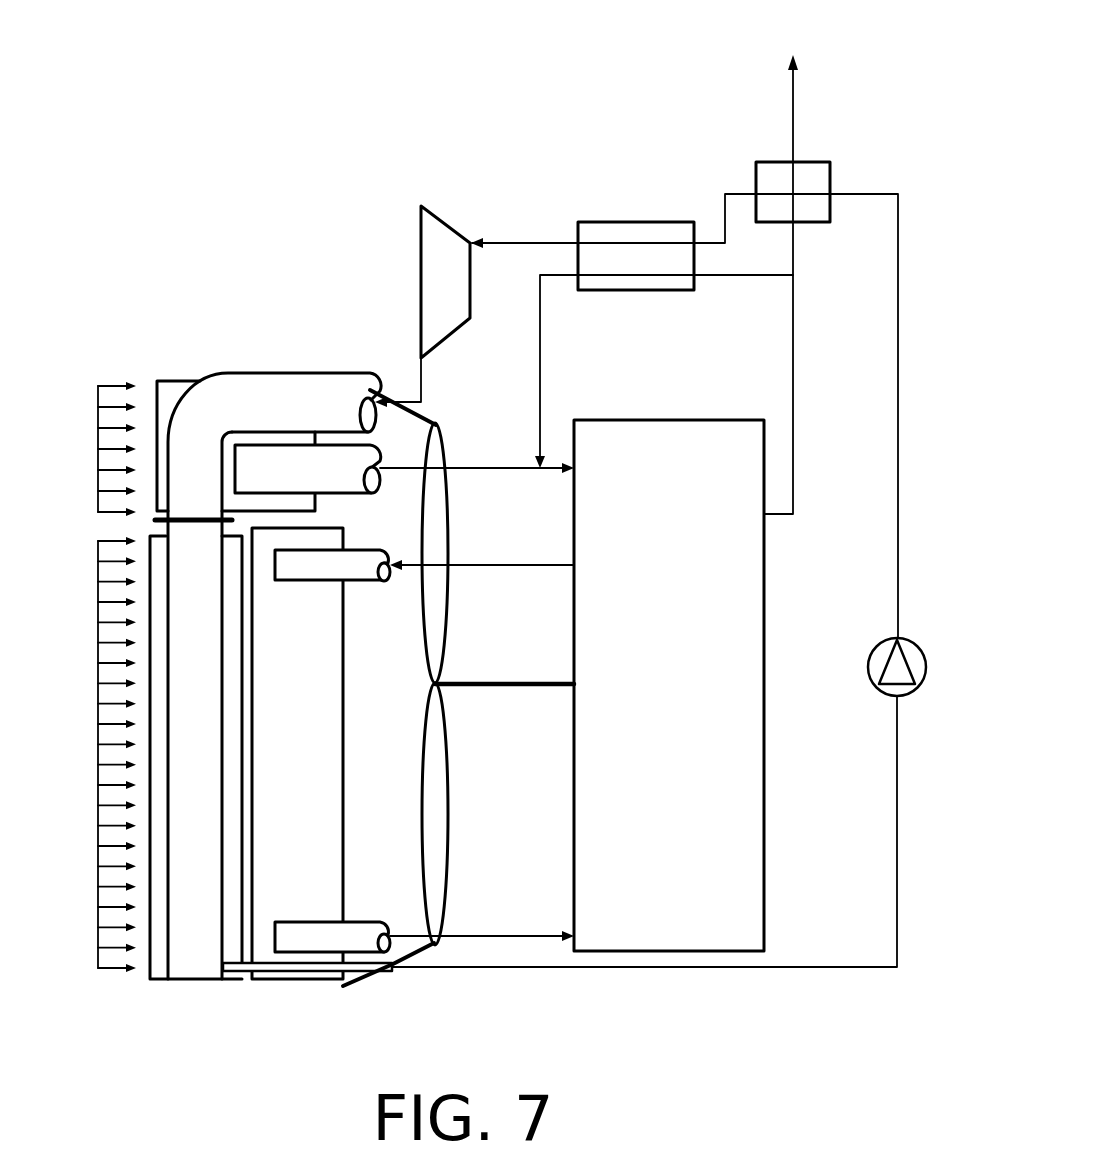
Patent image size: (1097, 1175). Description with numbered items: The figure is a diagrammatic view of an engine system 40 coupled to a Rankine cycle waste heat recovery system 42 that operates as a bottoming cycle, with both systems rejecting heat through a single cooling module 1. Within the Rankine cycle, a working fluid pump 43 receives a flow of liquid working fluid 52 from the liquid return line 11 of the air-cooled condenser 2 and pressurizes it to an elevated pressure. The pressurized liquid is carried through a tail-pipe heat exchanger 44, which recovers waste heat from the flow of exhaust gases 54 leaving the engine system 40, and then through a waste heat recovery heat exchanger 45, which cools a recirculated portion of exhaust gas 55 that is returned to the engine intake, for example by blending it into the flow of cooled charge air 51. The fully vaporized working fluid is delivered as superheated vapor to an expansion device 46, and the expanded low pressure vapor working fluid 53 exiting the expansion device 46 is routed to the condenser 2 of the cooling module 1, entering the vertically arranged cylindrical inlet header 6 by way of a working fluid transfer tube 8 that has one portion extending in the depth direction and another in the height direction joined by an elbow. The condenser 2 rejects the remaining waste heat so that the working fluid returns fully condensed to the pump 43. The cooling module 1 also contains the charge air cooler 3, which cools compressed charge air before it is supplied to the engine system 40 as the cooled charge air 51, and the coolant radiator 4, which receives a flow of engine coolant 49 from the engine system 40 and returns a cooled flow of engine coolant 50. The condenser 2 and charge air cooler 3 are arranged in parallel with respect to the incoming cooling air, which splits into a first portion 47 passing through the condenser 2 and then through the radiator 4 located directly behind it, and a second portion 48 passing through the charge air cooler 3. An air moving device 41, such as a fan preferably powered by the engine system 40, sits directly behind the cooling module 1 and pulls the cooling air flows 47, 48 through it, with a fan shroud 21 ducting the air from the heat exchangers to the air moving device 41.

The cooling module 1 is at (203, 352).
The air-cooled condenser 2 is at (157, 963).
The charge air cooler 3 is at (155, 378).
The coolant radiator 4 is at (310, 768).
The inlet header 6 is at (192, 922).
The working fluid transfer tube 8 is at (199, 427).
The liquid return line 11 is at (257, 965).
The fan shroud 21 is at (360, 986).
The engine system 40 is at (746, 852).
The air moving device 41 is at (444, 691).
The Rankine cycle waste heat recovery system 42 is at (560, 108).
The working fluid pump 43 is at (926, 657).
The tail-pipe heat exchanger 44 is at (833, 167).
The waste heat recovery heat exchanger 45 is at (613, 217).
The expansion device 46 is at (445, 222).
The first portion of cooling air 47 is at (96, 712).
The second portion of cooling air 48 is at (95, 463).
The flow of engine coolant 49 is at (515, 570).
The cooled flow of engine coolant 50 is at (477, 931).
The flow of cooled charge air 51 is at (500, 467).
The flow of liquid working fluid 52 is at (623, 971).
The expanded low pressure vapor working fluid 53 is at (418, 376).
The flow of exhaust gases 54 is at (797, 337).
The recirculated exhaust gas 55 is at (580, 365).